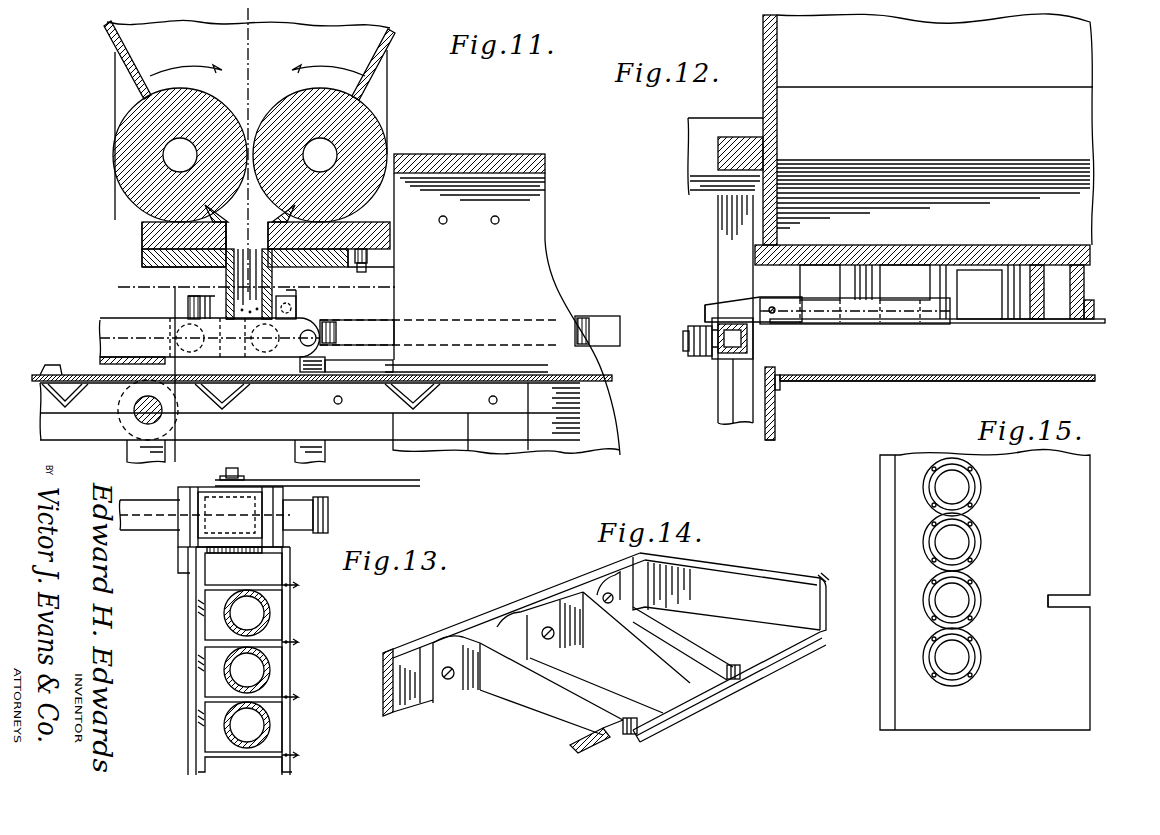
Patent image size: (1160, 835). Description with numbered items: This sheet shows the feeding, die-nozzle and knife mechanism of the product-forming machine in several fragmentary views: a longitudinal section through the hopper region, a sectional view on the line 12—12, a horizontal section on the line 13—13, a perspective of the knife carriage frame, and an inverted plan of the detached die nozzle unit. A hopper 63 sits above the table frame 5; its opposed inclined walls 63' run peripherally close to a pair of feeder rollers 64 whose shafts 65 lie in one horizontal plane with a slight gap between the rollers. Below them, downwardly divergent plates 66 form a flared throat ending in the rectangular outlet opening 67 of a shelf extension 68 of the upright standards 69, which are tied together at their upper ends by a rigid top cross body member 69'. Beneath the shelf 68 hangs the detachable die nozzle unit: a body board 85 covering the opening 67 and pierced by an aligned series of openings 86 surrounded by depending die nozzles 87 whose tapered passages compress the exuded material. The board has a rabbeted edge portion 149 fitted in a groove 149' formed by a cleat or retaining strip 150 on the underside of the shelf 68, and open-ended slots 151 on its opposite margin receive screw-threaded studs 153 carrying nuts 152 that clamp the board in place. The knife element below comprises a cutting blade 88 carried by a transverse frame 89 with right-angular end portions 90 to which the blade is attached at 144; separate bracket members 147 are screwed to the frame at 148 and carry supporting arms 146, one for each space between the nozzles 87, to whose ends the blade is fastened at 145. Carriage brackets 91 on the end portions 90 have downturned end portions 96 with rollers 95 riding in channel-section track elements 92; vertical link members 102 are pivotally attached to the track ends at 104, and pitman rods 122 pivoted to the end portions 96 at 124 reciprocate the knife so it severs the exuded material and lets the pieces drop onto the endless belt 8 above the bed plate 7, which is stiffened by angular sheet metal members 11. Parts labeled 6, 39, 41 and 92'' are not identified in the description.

In FIG. 11, the table frame 5 is at (468, 440).
In FIG. 12, the table frame 5 is at (775, 430).
In FIG. 11, the upright plate 6 is at (528, 415).
In FIG. 12, the upright plate 6 is at (777, 405).
In FIG. 11, the bed plate 7 is at (277, 385).
In FIG. 12, the bed plate 7 is at (925, 381).
In FIG. 11, the endless belt 8 is at (33, 375).
In FIG. 12, the endless belt 8 is at (940, 375).
In FIG. 11, the transverse sheet metal members 11 is at (85, 393).
In FIG. 11, the section line 12— 12 is at (256, 25).
In FIG. 11, the section line 13— 13 is at (245, 286).
In FIG. 11, the bracket 39 is at (127, 450).
In FIG. 11, the shaft 41 is at (162, 407).
In FIG. 11, the hopper 63 is at (232, 120).
In FIG. 12, the hopper 63 is at (787, 130).
In FIG. 11, the inclined walls 63' is at (249, 60).
In FIG. 11, the feeder rollers 64 is at (128, 125).
In FIG. 12, the feeder rollers 64 is at (995, 92).
In FIG. 11, the roller shafts 65 is at (173, 152).
In FIG. 11, the throat plates 66 is at (273, 212).
In FIG. 12, the throat plates 66 is at (1083, 227).
In FIG. 11, the outlet opening 67 is at (250, 224).
In FIG. 11, the shelf extension 68 is at (143, 230).
In FIG. 11, the upright standards 69 is at (502, 314).
In FIG. 12, the upright standards 69 is at (711, 270).
In FIG. 11, the top cross body member 69' is at (469, 146).
In FIG. 11, the body board 85 is at (371, 272).
In FIG. 12, the body board 85 is at (883, 262).
In FIG. 15, the body board 85 is at (1023, 722).
In FIG. 11, the openings 86 is at (226, 235).
In FIG. 12, the openings 86 is at (1050, 265).
In FIG. 11, the die nozzles 87 is at (227, 277).
In FIG. 12, the die nozzles 87 is at (988, 283).
In FIG. 13, the die nozzles 87 is at (270, 613).
In FIG. 15, the die nozzles 87 is at (972, 490).
In FIG. 11, the cutting blade 88 is at (290, 308).
In FIG. 12, the cutting blade 88 is at (997, 325).
In FIG. 13, the cutting blade 88 is at (285, 673).
In FIG. 14, the cutting blade 88 is at (673, 703).
In FIG. 11, the knife frame 89 is at (188, 302).
In FIG. 12, the knife frame 89 is at (843, 313).
In FIG. 13, the knife frame 89 is at (192, 632).
In FIG. 14, the knife frame 89 is at (535, 593).
In FIG. 11, the right-angular end portions 90 is at (295, 303).
In FIG. 13, the right-angular end portions 90 is at (243, 569).
In FIG. 14, the right-angular end portions 90 is at (752, 580).
In FIG. 12, the carriage brackets 91 is at (735, 308).
In FIG. 13, the carriage brackets 91 is at (217, 522).
In FIG. 11, the track elements 92 is at (195, 328).
In FIG. 12, the track elements 92 is at (689, 306).
In FIG. 13, the track elements 92 is at (204, 504).
In FIG. 11, the shaft end 92'' is at (107, 342).
In FIG. 12, the rollers 95 is at (748, 340).
In FIG. 12, the downturned end portions 96 is at (708, 340).
In FIG. 11, the vertical link members 102 is at (323, 357).
In FIG. 12, the vertical link members 102 is at (720, 392).
In FIG. 13, the vertical link members 102 is at (330, 514).
In FIG. 11, the pivotal attachment 104 is at (310, 337).
In FIG. 11, the pitman rods 122 is at (378, 332).
In FIG. 12, the pitman rods 122 is at (697, 327).
In FIG. 13, the pitman rods 122 is at (395, 486).
In FIG. 12, the pivotal attachment 124 is at (693, 343).
In FIG. 13, the pivotal attachment 124 is at (233, 468).
In FIG. 14, the blade end attachment 144 is at (820, 633).
In FIG. 13, the blade attachment 145 is at (298, 752).
In FIG. 14, the blade attachment 145 is at (727, 682).
In FIG. 12, the supporting arms 146 is at (1080, 318).
In FIG. 13, the supporting arms 146 is at (240, 756).
In FIG. 14, the supporting arms 146 is at (647, 657).
In FIG. 13, the bracket members 147 is at (203, 702).
In FIG. 14, the bracket members 147 is at (607, 587).
In FIG. 14, the screw attachment 148 is at (550, 637).
In FIG. 11, the rabbeted edge portion 149 is at (124, 244).
In FIG. 15, the rabbeted edge portion 149 is at (864, 592).
In FIG. 11, the groove 149' is at (144, 275).
In FIG. 11, the retaining strip 150 is at (185, 258).
In FIG. 11, the open-ended slots 151 is at (441, 221).
In FIG. 15, the open-ended slots 151 is at (1065, 597).
In FIG. 11, the nut 152 is at (372, 270).
In FIG. 11, the screw-threaded stud 153 is at (370, 258).